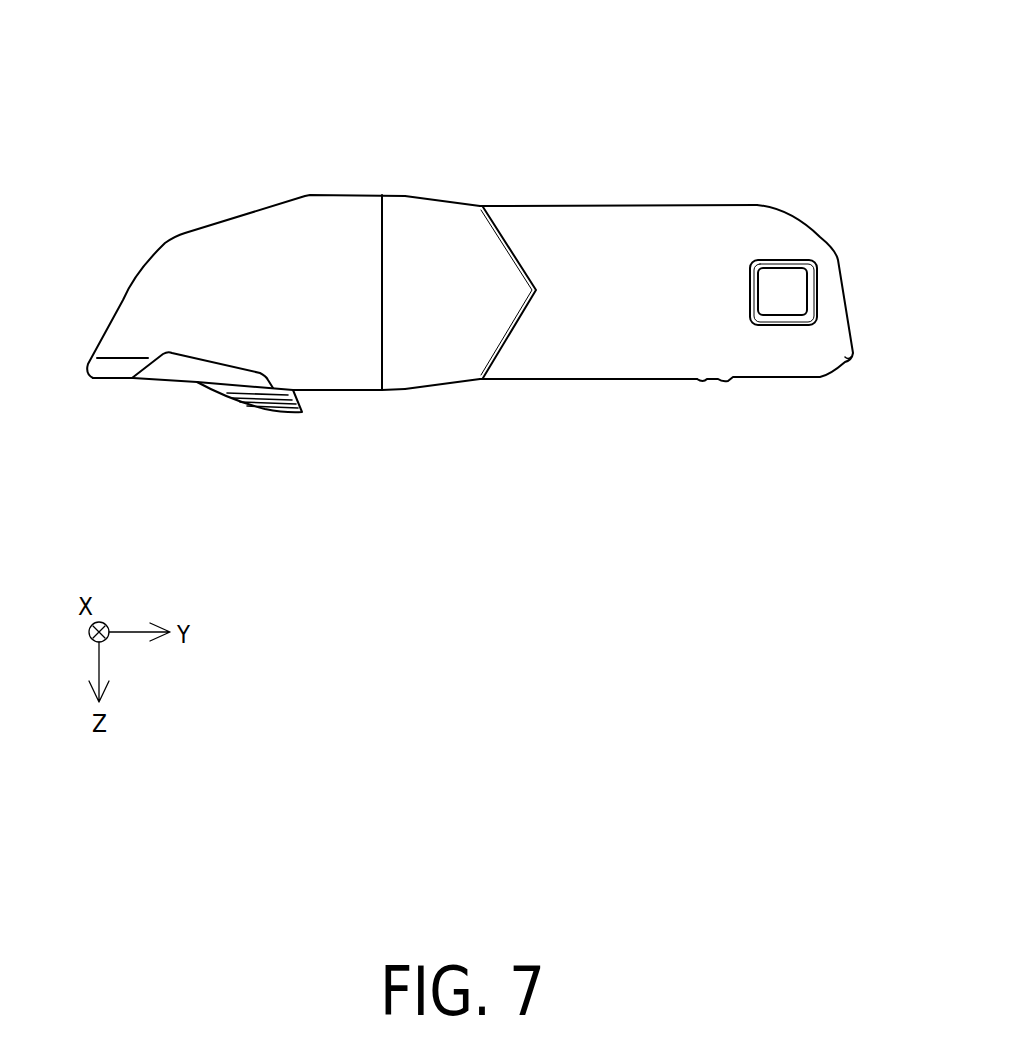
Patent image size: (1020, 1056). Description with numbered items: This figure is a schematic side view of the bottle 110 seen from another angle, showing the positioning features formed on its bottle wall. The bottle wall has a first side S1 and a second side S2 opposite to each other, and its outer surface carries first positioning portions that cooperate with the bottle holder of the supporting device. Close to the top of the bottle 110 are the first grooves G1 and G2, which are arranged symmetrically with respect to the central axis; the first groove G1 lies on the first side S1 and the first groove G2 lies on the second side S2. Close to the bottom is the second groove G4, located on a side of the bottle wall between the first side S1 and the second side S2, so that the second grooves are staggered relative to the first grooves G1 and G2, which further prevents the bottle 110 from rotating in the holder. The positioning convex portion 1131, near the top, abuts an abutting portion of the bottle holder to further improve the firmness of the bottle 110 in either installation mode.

The bottle 110 is at (90, 65).
The first groove G1 is at (448, 388).
The first groove G2 is at (446, 201).
The second groove G4 is at (777, 259).
The first side S1 is at (614, 380).
The second side S2 is at (612, 204).
The positioning convex portion 1131 is at (481, 342).